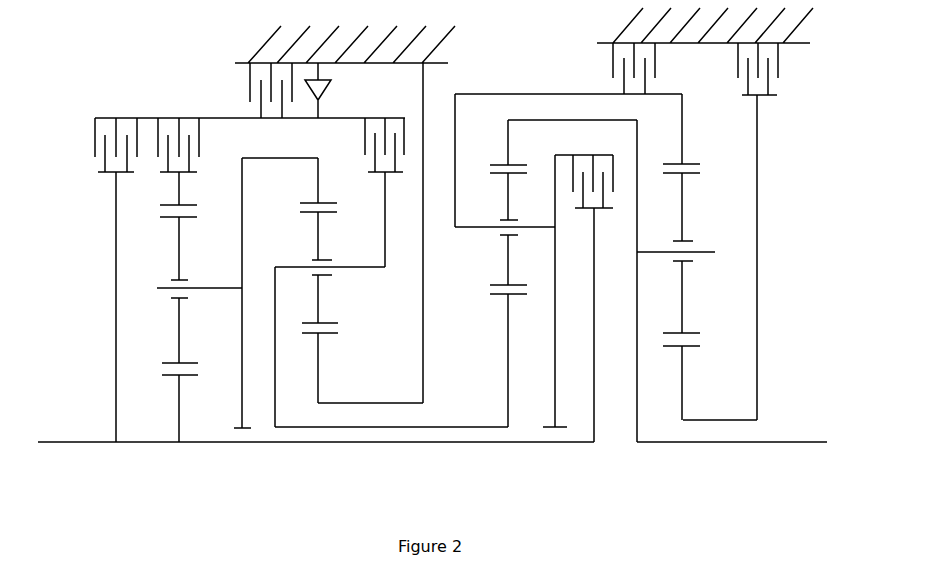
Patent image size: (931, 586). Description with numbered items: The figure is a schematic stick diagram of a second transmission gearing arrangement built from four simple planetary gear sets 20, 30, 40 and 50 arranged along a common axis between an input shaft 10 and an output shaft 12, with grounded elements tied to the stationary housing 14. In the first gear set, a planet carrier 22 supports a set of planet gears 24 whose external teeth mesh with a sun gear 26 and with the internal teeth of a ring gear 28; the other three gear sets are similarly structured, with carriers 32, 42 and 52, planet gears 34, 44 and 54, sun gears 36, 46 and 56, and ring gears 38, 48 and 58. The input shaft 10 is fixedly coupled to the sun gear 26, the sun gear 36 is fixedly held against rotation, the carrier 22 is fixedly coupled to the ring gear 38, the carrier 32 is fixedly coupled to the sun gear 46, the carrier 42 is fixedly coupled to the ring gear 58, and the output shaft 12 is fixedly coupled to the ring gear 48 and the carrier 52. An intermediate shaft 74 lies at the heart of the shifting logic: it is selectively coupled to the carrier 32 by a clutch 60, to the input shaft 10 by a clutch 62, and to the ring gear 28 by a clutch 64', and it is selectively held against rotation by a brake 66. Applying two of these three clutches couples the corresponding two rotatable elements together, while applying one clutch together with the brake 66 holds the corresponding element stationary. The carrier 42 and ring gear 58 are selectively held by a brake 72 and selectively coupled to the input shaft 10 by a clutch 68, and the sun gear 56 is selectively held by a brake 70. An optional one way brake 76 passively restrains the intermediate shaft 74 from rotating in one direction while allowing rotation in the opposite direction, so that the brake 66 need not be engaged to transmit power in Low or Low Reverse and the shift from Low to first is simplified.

The input shaft 10 is at (48, 443).
The output shaft 12 is at (800, 443).
The transmission housing 14 is at (267, 50).
The planetary gear set 20 is at (225, 319).
The planet carrier 22 is at (243, 255).
The planet gears 24 is at (177, 253).
The sun gear 26 is at (180, 428).
The ring gear 28 is at (177, 188).
The planetary gear set 30 is at (391, 271).
The carrier 32 is at (387, 230).
The planet gears 34 is at (322, 247).
The sun gear 36 is at (322, 370).
The ring gear 38 is at (318, 182).
The planetary gear set 40 is at (520, 286).
The carrier 42 is at (557, 247).
The planet gears 44 is at (512, 210).
The sun gear 46 is at (512, 332).
The ring gear 48 is at (508, 147).
The planetary gear set 50 is at (616, 287).
The carrier 52 is at (637, 383).
The planet gears 54 is at (685, 220).
The sun gear 56 is at (688, 380).
The ring gear 58 is at (682, 127).
The clutch 60 is at (397, 117).
The clutch 62 is at (95, 130).
The clutch 64' is at (215, 161).
The brake 66 is at (250, 83).
The clutch 68 is at (575, 156).
The brake 70 is at (780, 58).
The brake 72 is at (613, 63).
The intermediate shaft 74 is at (352, 120).
The one way brake 76 is at (331, 88).